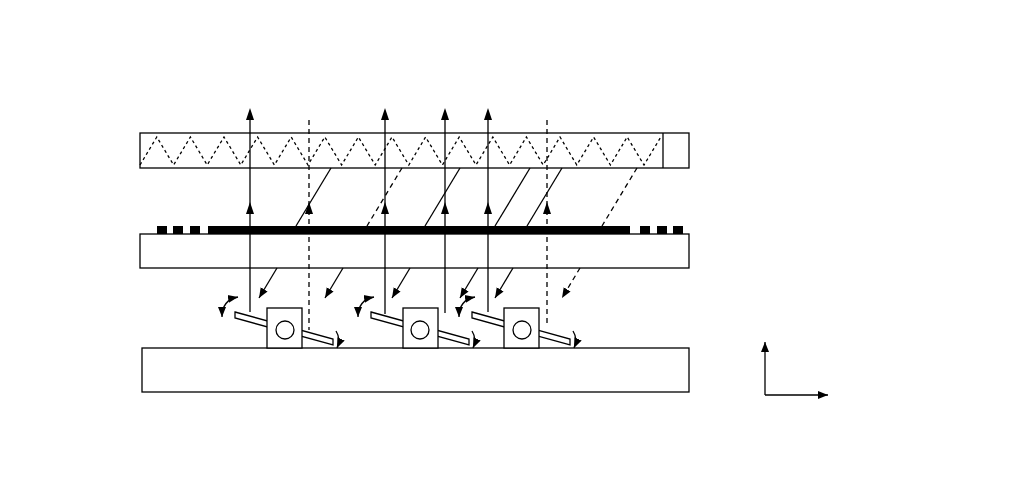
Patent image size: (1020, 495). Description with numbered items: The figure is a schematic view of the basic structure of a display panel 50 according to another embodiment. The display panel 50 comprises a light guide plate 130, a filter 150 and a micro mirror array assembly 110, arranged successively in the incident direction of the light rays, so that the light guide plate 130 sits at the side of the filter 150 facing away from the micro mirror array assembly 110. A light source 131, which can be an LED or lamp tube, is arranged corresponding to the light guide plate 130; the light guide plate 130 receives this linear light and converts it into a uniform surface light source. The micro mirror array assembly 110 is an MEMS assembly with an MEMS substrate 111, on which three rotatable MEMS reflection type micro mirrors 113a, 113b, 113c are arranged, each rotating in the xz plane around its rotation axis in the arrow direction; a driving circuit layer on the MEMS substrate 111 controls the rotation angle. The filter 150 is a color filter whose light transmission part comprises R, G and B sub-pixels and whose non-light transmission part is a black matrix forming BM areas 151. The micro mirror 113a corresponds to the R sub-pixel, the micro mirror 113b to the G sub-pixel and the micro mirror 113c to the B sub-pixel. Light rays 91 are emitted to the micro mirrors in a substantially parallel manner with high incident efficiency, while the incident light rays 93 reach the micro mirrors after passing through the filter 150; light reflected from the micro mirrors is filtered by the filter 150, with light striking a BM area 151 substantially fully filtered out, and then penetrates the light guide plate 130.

The display panel 50 is at (118, 74).
The light guide plate 130 is at (140, 150).
The light source 131 is at (683, 137).
The filter 150 is at (355, 247).
The BM area 151 is at (353, 234).
The light rays 93 is at (548, 214).
The light rays 91 is at (574, 287).
The micro mirror array assembly 110 is at (65, 325).
The MEMS substrate 111 is at (150, 366).
The micro mirror 113a is at (235, 318).
The micro mirror 113b is at (398, 323).
The micro mirror 113c is at (582, 333).